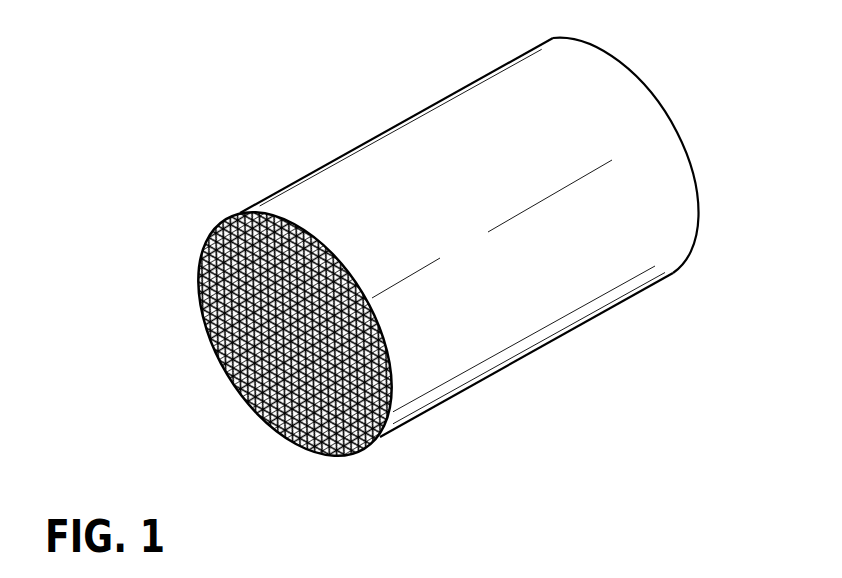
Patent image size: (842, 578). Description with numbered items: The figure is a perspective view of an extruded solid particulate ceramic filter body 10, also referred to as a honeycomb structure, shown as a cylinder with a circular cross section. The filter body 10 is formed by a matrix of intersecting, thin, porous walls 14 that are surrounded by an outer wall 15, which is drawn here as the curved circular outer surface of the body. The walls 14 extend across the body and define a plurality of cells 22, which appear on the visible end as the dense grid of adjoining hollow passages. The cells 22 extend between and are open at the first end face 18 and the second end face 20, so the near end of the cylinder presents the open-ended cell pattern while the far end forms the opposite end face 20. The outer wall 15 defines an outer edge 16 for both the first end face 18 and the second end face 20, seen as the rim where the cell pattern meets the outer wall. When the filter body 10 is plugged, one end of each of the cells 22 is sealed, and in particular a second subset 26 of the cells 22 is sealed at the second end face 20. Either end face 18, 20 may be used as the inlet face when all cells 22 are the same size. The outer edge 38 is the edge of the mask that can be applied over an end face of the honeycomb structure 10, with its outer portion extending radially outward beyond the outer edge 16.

The filter body 10 is at (243, 150).
The walls 14 is at (203, 277).
The outer wall 15 is at (350, 173).
The outer edge 16 is at (283, 438).
The first end face 18 is at (303, 460).
The second end face 20 is at (684, 137).
The cells 22 is at (218, 355).
The second subset of cells 26 is at (256, 415).
The outer edge of mask 38 is at (380, 438).